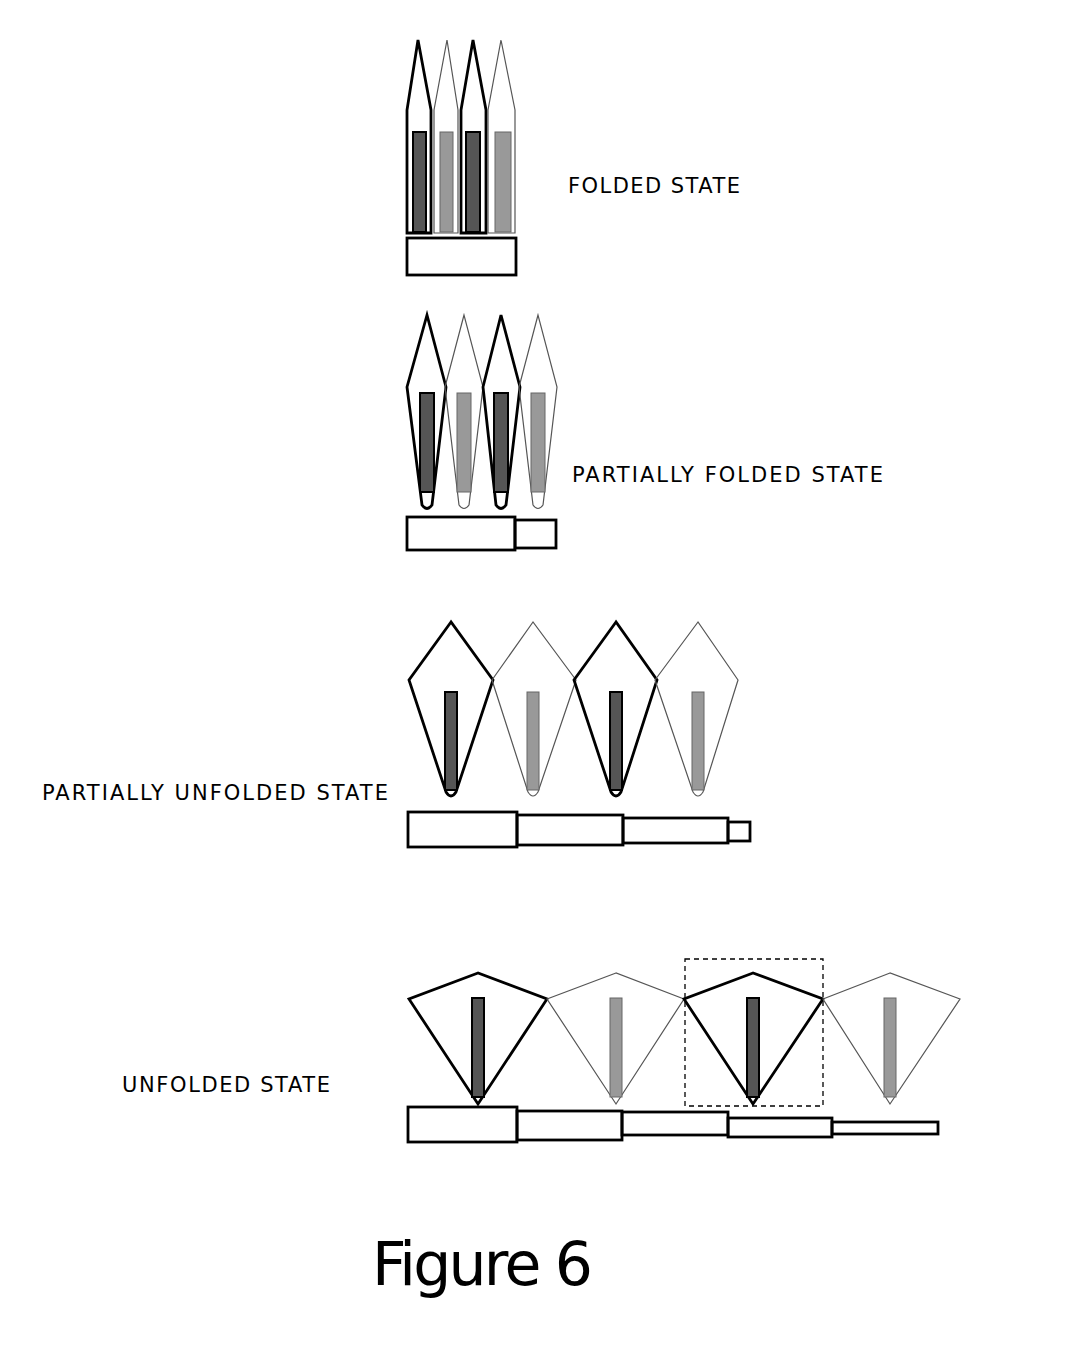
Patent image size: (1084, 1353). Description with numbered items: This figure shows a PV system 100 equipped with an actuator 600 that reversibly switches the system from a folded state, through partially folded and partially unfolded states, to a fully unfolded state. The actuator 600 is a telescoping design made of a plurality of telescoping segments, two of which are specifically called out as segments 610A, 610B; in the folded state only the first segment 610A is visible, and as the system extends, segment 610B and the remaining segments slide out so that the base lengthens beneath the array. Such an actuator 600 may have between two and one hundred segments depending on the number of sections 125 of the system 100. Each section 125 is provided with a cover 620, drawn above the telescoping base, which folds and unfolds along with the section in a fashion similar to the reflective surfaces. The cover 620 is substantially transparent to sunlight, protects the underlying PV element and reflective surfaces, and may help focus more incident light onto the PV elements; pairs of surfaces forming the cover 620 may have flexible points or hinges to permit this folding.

The PV system 100 is at (378, 140).
The actuator 600 is at (583, 599).
The telescoping segment 610A is at (420, 263).
The telescoping segment 610B is at (537, 533).
The cover 620 is at (515, 47).
The section 125 is at (777, 952).